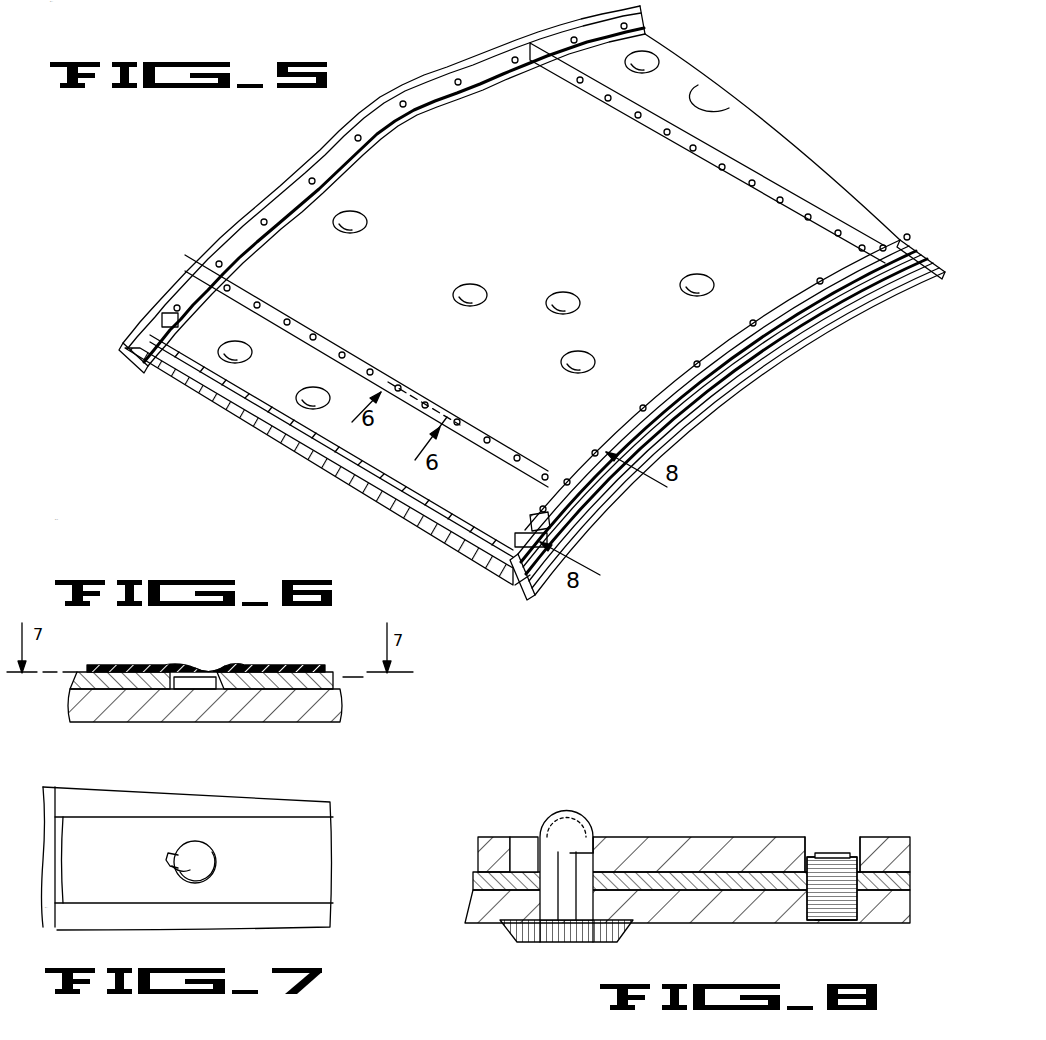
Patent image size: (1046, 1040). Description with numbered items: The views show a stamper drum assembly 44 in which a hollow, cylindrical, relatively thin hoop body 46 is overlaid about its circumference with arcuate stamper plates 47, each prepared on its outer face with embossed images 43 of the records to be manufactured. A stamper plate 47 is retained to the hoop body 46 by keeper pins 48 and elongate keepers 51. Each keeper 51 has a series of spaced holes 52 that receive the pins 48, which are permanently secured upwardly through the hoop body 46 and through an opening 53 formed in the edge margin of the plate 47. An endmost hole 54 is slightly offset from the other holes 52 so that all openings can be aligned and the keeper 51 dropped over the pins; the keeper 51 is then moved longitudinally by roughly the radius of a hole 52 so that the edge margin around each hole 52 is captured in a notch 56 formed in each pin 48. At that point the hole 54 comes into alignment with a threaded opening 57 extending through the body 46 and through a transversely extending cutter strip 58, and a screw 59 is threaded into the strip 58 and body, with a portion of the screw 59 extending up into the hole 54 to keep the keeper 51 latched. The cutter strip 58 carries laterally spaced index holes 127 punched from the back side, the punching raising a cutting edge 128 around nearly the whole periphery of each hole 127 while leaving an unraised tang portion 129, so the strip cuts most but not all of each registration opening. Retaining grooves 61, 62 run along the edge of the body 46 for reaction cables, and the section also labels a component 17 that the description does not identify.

In FIG. 6, the coating layer 17 is at (132, 666).
In FIG. 5, the embossed images 43 is at (352, 218).
In FIG. 5, the stamper drum assembly 44 is at (767, 408).
In FIG. 5, the hoop body 46 is at (253, 430).
In FIG. 6, the hoop body 46 is at (320, 717).
In FIG. 7, the hoop body 46 is at (50, 793).
In FIG. 8, the hoop body 46 is at (473, 903).
In FIG. 5, the stamper plate 47 is at (556, 199).
In FIG. 7, the stamper plate 47 is at (123, 800).
In FIG. 8, the stamper plate 47 is at (470, 880).
In FIG. 8, the keeper pin 48 is at (570, 903).
In FIG. 5, the keeper 51 is at (450, 88).
In FIG. 8, the keeper 51 is at (680, 837).
In FIG. 5, the hole 52 is at (752, 323).
In FIG. 8, the hole 52 is at (510, 850).
In FIG. 8, the opening 53 is at (567, 853).
In FIG. 5, the endmost hole 54 is at (883, 253).
In FIG. 8, the endmost hole 54 is at (817, 853).
In FIG. 8, the notch 56 is at (587, 847).
In FIG. 8, the threaded opening 57 is at (843, 920).
In FIG. 5, the cutter strip 58 is at (327, 347).
In FIG. 6, the cutter strip 58 is at (323, 685).
In FIG. 7, the cutter strip 58 is at (258, 893).
In FIG. 8, the cutter strip 58 is at (867, 873).
In FIG. 8, the screw 59 is at (847, 853).
In FIG. 5, the retaining groove 61 is at (905, 248).
In FIG. 5, the retaining groove 62 is at (640, 8).
In FIG. 6, the index hole 127 is at (200, 678).
In FIG. 7, the index hole 127 is at (200, 858).
In FIG. 6, the cutting edge 128 is at (217, 668).
In FIG. 7, the cutting edge 128 is at (180, 868).
In FIG. 7, the tang portion 129 is at (172, 855).